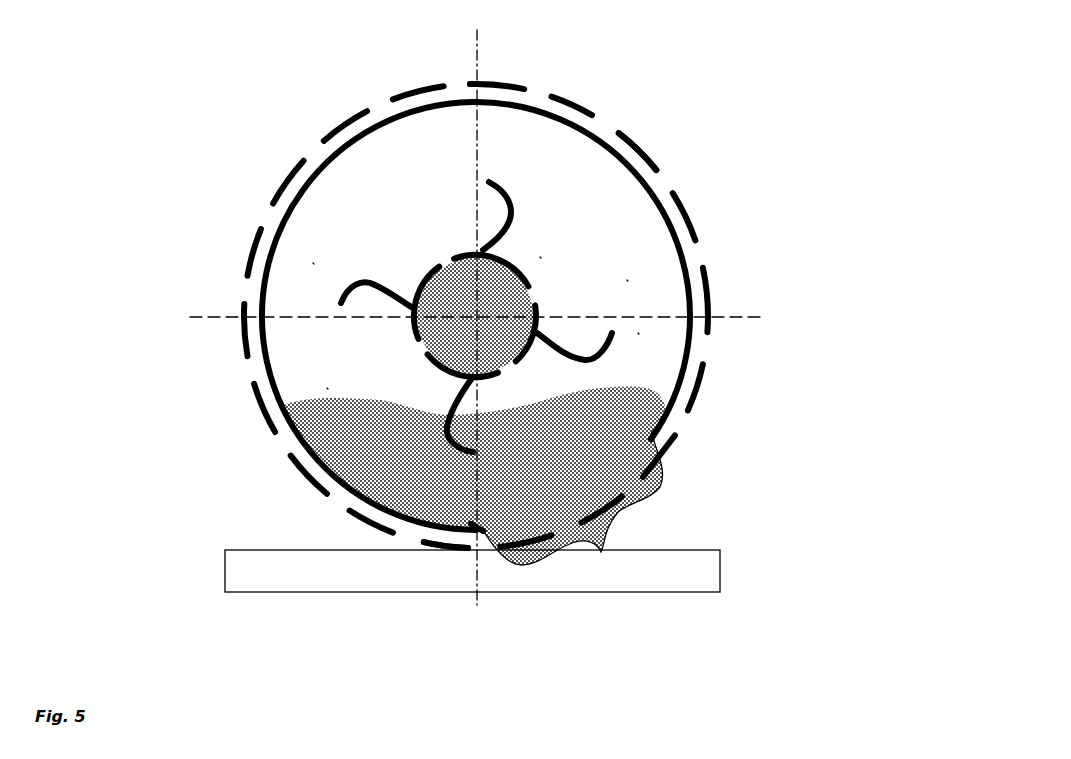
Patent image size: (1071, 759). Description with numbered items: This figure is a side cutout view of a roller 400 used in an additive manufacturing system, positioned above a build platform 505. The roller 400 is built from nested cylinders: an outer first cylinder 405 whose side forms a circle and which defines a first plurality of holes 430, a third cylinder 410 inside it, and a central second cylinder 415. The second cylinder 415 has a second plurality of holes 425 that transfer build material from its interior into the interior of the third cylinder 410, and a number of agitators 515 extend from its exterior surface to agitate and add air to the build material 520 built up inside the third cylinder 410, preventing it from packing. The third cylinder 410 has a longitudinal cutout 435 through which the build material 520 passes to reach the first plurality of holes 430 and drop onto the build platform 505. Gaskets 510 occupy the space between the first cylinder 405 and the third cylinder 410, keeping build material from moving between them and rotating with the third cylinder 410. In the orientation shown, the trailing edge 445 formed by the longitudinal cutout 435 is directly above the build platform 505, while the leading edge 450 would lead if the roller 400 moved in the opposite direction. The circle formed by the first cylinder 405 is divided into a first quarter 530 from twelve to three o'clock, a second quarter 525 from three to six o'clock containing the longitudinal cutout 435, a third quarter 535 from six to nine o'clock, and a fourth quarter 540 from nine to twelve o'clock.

The roller 400 is at (125, 77).
The first cylinder 405 is at (282, 183).
The third cylinder 410 is at (270, 250).
The second cylinder 415 is at (540, 257).
The second plurality of holes 425 is at (417, 349).
The first plurality of holes 430 is at (618, 123).
The longitudinal cutout 435 is at (605, 553).
The trailing edge 445 is at (471, 524).
The leading edge 450 is at (652, 423).
The build platform 505 is at (220, 550).
The gaskets 510 is at (663, 452).
The agitators 515 is at (510, 190).
The build material 520 is at (371, 455).
The second quarter 525 is at (638, 333).
The first quarter 530 is at (627, 280).
The third quarter 535 is at (327, 388).
The fourth quarter 540 is at (313, 263).